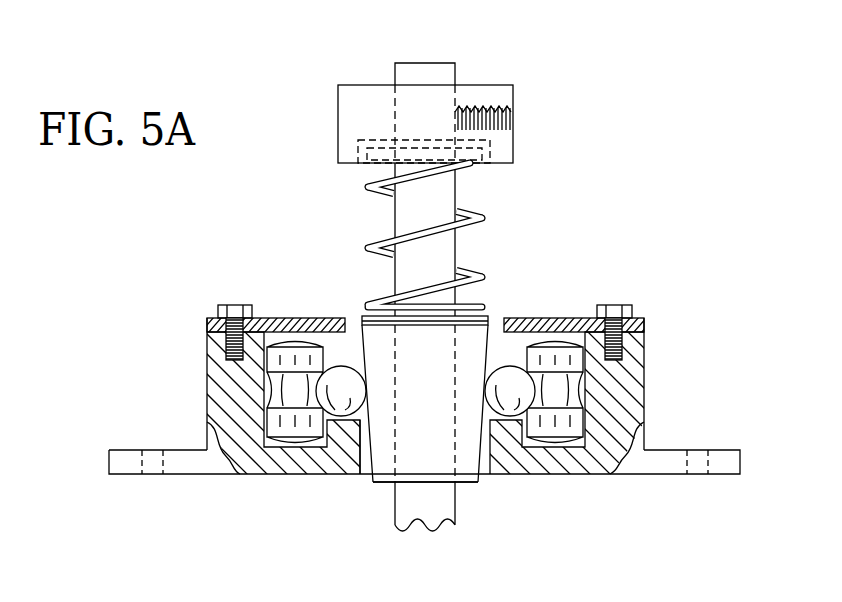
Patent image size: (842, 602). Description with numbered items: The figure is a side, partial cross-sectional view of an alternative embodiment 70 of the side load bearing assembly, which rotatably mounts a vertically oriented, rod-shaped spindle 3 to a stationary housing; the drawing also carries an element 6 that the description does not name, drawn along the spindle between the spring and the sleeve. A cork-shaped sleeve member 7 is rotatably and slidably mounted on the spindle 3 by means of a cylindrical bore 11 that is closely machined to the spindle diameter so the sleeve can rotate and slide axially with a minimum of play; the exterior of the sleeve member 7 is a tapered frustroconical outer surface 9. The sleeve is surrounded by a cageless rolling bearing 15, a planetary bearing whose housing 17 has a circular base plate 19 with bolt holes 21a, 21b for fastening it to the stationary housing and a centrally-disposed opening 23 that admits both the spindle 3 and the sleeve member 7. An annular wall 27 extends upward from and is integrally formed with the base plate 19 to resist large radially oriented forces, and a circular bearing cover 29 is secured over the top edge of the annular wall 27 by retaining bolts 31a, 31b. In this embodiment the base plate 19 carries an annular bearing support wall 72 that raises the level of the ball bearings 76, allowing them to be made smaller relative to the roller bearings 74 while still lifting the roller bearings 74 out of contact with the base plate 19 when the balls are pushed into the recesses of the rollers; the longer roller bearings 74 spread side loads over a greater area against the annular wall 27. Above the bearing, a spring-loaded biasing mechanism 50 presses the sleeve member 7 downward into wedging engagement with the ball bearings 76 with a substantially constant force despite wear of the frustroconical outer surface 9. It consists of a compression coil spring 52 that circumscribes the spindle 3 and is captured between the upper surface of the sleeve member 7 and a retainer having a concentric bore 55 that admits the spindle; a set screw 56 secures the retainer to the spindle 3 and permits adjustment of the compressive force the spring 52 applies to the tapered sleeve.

The alternative embodiment of the side load bearing assembly 70 is at (262, 55).
The bore 55 is at (398, 100).
The biasing mechanism 50 is at (333, 125).
The set screw 56 is at (502, 112).
The compression coil spring 52 is at (478, 218).
The shaft 6 is at (440, 250).
The retaining bolt 31a is at (233, 312).
The circular bearing cover 29 is at (297, 318).
The cageless rolling bearing 15 is at (160, 337).
The roller bearings 74 is at (557, 348).
The ball bearings 76 is at (507, 378).
The retaining bolt 31b is at (614, 310).
The annular wall 27 is at (612, 383).
The housing 17 is at (718, 395).
The sleeve member 7 is at (437, 393).
The annular bearing support wall 72 is at (485, 432).
The centrally-disposed opening 23 is at (365, 455).
The cylindrical bore 11 is at (395, 490).
The spindle 3 is at (436, 515).
The frustroconical outer surface 9 is at (468, 468).
The circular base plate 19 is at (640, 463).
The bolt hole 21a is at (152, 474).
The bolt hole 21b is at (697, 474).